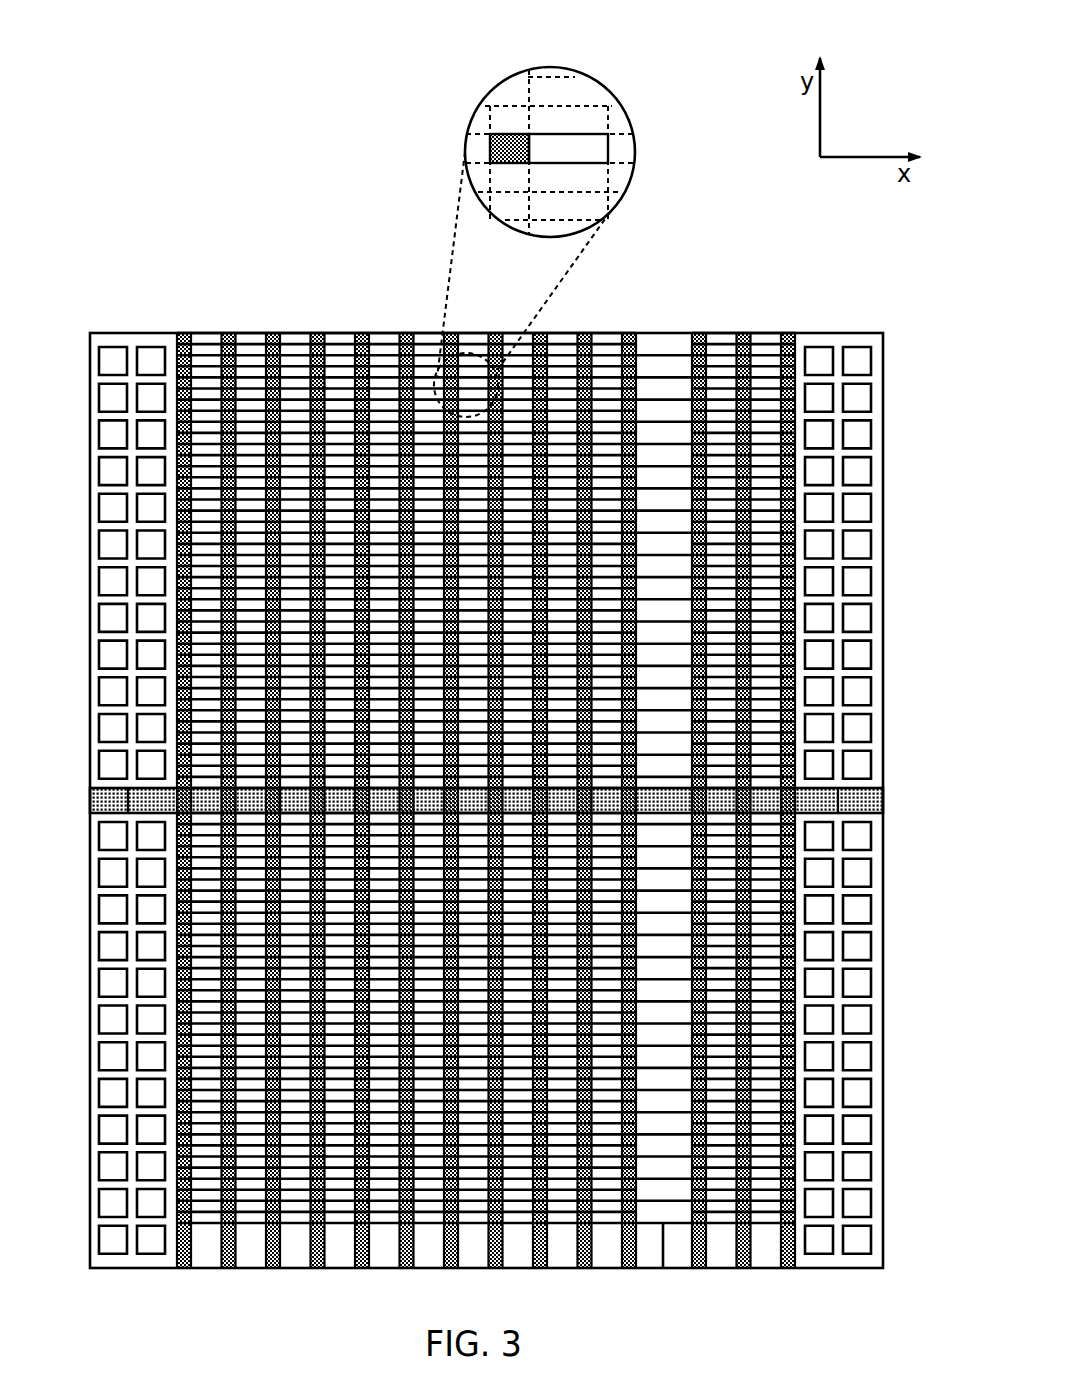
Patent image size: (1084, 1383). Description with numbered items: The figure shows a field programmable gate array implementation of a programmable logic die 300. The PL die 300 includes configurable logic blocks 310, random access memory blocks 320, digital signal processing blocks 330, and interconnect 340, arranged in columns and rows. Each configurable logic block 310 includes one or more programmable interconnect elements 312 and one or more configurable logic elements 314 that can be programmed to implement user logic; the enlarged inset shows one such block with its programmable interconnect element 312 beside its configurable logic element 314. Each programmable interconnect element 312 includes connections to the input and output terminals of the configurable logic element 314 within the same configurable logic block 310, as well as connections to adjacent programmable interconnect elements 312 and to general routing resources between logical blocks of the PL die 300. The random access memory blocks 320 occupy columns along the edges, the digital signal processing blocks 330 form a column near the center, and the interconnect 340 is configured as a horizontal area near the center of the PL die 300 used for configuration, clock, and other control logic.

The programmable logic die 300 is at (468, 719).
The configurable logic block 310 is at (265, 313).
The programmable interconnect element 312 is at (513, 134).
The configurable logic element 314 is at (573, 134).
The random access memory block 320 is at (112, 347).
The digital signal processing block 330 is at (661, 333).
The interconnect 340 is at (883, 801).